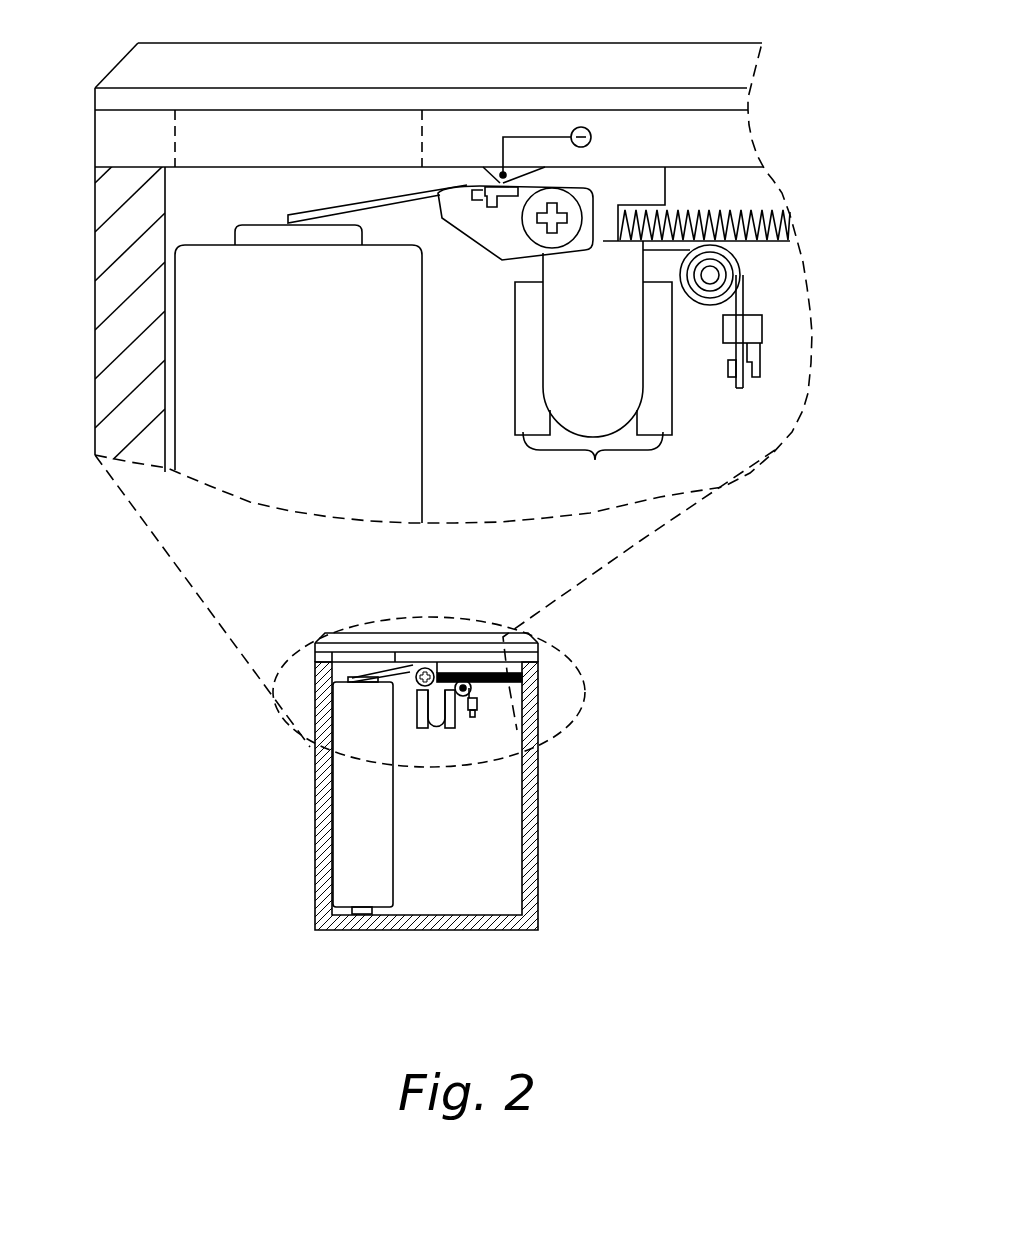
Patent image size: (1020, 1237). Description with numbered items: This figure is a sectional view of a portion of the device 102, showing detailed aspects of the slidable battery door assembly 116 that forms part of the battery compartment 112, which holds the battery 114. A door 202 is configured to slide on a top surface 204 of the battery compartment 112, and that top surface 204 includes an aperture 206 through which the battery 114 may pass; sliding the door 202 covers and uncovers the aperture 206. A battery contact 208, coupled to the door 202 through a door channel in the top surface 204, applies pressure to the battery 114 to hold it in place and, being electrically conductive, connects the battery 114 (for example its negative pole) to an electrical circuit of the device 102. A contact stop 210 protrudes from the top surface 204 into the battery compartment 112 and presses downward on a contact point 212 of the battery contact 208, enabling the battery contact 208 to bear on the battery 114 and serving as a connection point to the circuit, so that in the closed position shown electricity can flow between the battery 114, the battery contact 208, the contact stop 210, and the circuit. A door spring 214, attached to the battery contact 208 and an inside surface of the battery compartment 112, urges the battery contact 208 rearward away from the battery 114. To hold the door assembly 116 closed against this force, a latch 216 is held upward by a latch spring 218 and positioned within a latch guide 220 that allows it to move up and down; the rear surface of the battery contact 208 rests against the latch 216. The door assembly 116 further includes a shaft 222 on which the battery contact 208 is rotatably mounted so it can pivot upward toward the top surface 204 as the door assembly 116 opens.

The device 102 is at (309, 596).
The battery compartment 112 is at (316, 522).
The battery 114 is at (298, 569).
The slidable battery door assembly 116 is at (570, 653).
The door 202 is at (148, 72).
The top surface 204 is at (414, 138).
The aperture 206 is at (346, 138).
The battery contact 208 is at (529, 229).
The contact stop 210 is at (500, 182).
The contact point 212 is at (437, 197).
The door spring 214 is at (755, 212).
The latch 216 is at (602, 339).
The latch spring 218 is at (740, 266).
The latch guide 220 is at (593, 460).
The shaft 222 is at (555, 245).